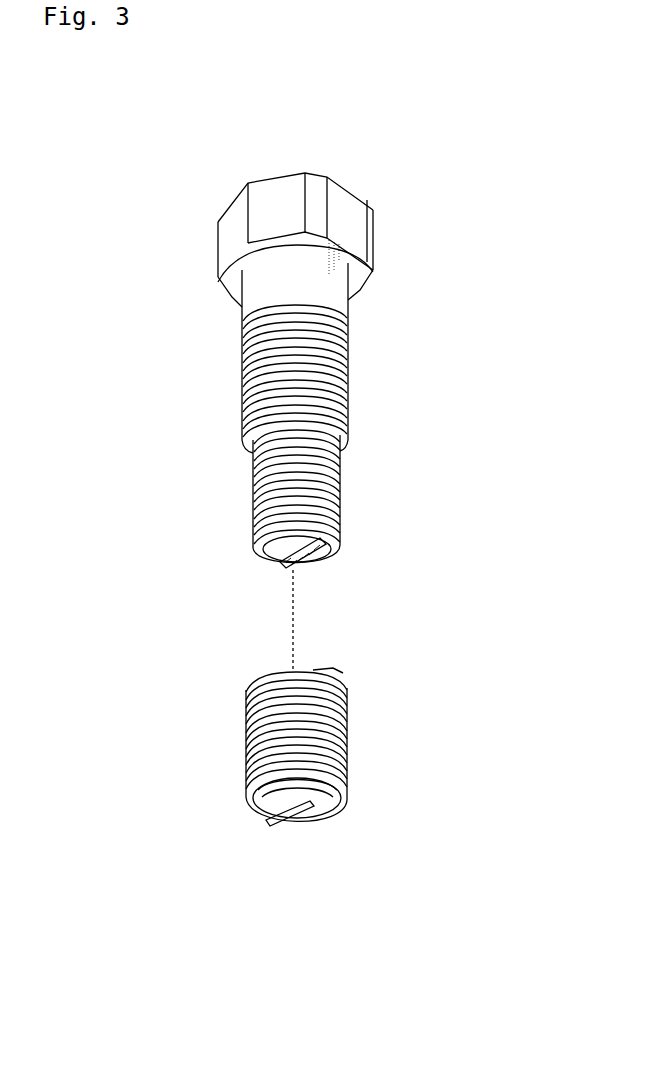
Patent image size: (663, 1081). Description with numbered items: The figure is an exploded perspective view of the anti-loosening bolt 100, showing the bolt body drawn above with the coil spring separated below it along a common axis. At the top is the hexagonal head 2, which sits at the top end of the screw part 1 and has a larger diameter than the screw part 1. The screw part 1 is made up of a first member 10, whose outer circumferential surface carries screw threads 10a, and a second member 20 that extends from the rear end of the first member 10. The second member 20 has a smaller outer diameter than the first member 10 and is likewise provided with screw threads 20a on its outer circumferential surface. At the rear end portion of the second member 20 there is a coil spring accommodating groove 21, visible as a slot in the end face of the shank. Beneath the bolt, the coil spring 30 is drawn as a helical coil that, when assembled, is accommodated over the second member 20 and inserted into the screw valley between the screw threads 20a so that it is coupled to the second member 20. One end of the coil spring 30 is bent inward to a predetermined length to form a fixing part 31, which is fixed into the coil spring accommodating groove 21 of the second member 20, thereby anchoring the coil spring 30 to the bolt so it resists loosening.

The anti-loosening bolt 100 is at (145, 200).
The screw part 1 is at (388, 446).
The head 2 is at (343, 218).
The first member 10 is at (272, 293).
The screw threads 10a is at (350, 370).
The second member 20 is at (253, 495).
The screw threads 20a is at (340, 494).
The coil spring accommodating groove 21 is at (328, 558).
The coil spring 30 is at (245, 709).
The fixing part 31 is at (285, 833).